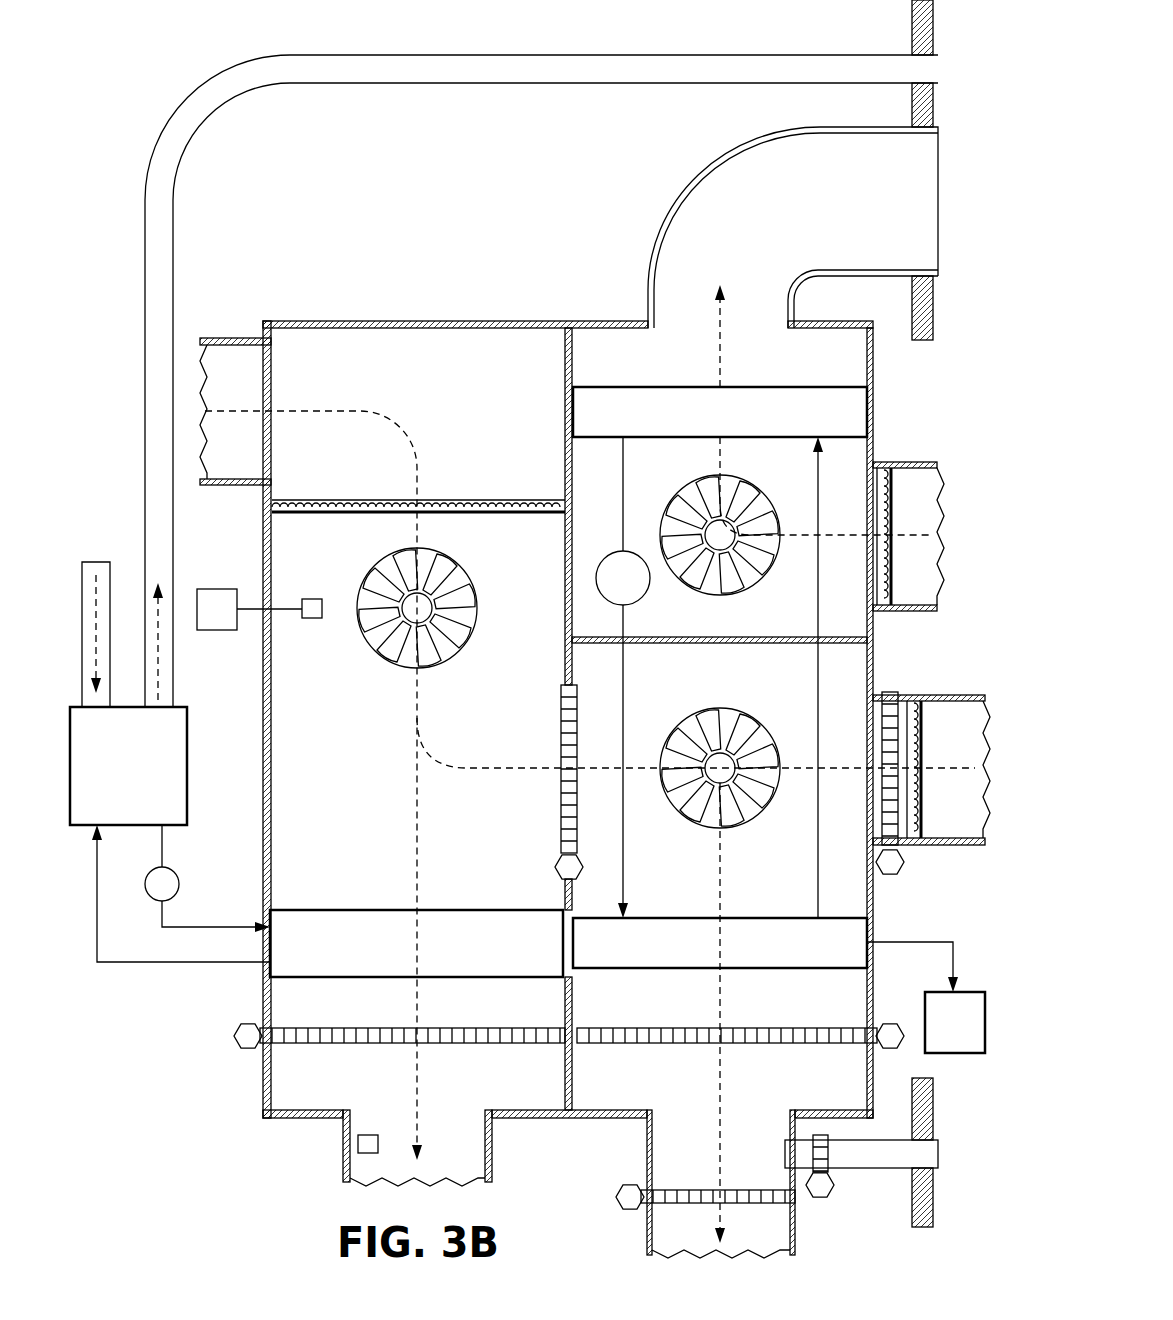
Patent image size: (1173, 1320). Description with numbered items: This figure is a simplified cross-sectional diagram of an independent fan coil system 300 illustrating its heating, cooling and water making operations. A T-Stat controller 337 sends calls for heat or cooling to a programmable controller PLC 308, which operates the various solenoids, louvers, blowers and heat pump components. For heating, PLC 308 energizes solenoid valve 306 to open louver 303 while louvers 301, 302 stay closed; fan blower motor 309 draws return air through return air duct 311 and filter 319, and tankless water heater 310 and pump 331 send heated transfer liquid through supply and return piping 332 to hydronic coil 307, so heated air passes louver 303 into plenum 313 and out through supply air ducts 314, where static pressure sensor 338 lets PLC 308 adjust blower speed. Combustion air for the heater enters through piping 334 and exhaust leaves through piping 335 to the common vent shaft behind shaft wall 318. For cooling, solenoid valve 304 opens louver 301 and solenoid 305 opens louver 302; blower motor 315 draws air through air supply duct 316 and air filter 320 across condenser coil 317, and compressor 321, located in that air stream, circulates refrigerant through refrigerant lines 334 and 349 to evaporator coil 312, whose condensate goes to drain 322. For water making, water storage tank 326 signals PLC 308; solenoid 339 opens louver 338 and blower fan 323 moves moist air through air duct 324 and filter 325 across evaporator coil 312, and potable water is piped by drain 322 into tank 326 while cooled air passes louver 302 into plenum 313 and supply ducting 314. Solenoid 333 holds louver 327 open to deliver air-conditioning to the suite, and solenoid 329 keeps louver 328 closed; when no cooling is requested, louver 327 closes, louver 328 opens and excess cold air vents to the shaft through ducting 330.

The independent fan coil system 300 is at (388, 312).
The louver 301 is at (560, 712).
The louver 302 is at (775, 1028).
The louver 303 is at (465, 1028).
The solenoid valve 304 is at (555, 866).
The solenoid 305 is at (903, 1024).
The solenoid valve 306 is at (235, 1036).
The hydronic coil 307 is at (322, 910).
The programmable controller PLC 308 is at (314, 598).
The fan blower motor 309 is at (476, 560).
The tankless water heater 310 is at (188, 735).
The return air duct 311 is at (235, 337).
The evaporator coil 312 is at (777, 917).
The plenum 313 is at (569, 1076).
The supply air ducts 314 is at (343, 1148).
The blower motor 315 is at (664, 510).
The air supply duct 316 is at (903, 460).
The condenser coil 317 is at (770, 386).
The shaft wall 318 is at (912, 28).
The filter 319 is at (507, 498).
The air filter 320 is at (895, 585).
The compressor 321 is at (623, 578).
The drain 322 is at (910, 940).
The blower fan 323 is at (683, 828).
The air duct 324 is at (957, 694).
The filter 325 is at (925, 750).
The water storage tank 326 is at (955, 1022).
The louver 327 is at (685, 1190).
The louver 328 is at (822, 1133).
The solenoid 329 is at (820, 1200).
The ducting 330 is at (868, 1170).
The pump 331 is at (181, 885).
The supply and return piping 332 is at (166, 850).
The solenoid 333 is at (615, 1205).
The piping 334 is at (96, 560).
The piping 335 is at (145, 205).
The T-Stat controller 337 is at (217, 588).
The louver 338 is at (880, 748).
The solenoid 339 is at (905, 865).
The refrigerant line 349 is at (816, 668).